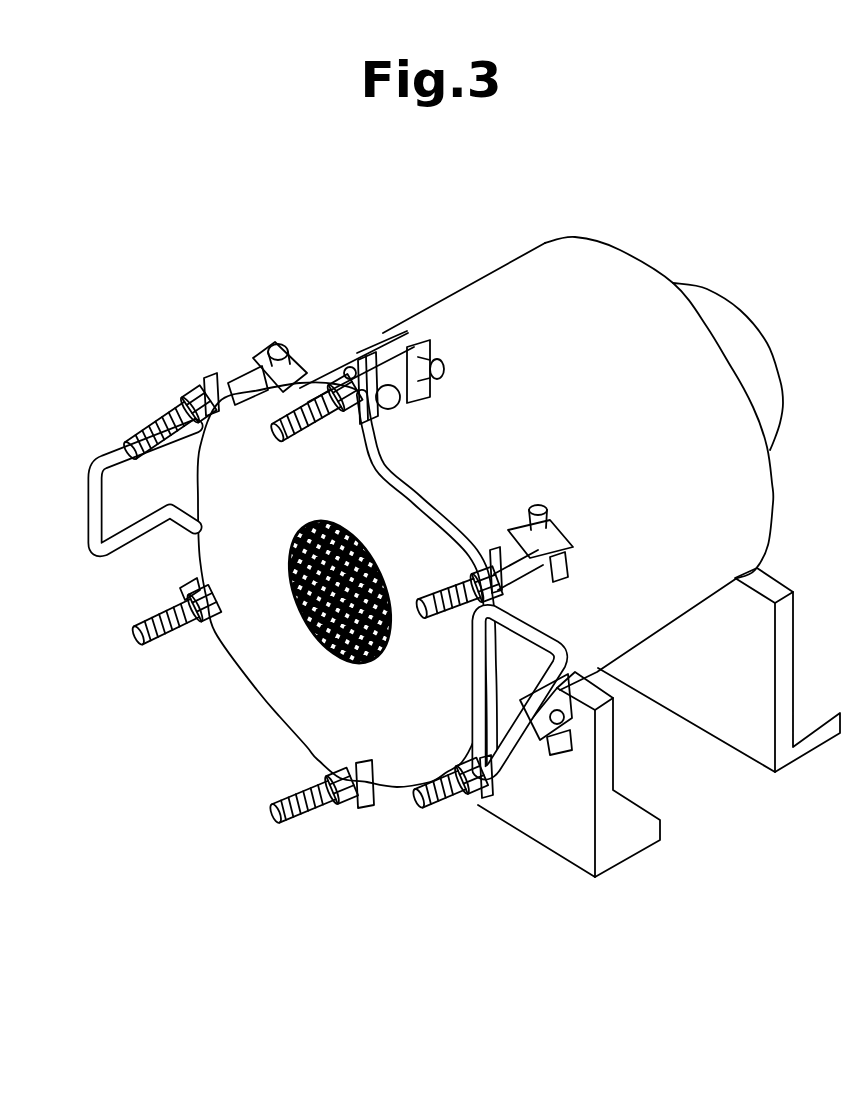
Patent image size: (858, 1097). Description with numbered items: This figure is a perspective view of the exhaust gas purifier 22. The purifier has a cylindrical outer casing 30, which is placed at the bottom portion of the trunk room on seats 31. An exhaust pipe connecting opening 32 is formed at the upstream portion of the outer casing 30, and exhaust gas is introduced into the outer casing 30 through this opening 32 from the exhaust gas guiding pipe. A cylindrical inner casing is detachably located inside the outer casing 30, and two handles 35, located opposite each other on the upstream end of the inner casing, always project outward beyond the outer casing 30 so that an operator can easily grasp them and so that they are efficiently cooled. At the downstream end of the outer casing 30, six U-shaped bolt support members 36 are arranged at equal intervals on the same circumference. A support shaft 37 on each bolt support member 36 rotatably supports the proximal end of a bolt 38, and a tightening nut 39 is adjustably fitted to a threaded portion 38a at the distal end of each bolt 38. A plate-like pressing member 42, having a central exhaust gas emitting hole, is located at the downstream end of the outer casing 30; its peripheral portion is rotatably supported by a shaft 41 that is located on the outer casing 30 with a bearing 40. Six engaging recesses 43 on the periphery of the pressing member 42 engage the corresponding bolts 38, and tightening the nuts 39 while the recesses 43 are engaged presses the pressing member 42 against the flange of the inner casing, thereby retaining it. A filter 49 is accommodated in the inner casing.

The exhaust gas purifier 22 is at (451, 227).
The outer casing 30 is at (779, 483).
The seats 31 is at (803, 757).
The exhaust pipe connecting opening 32 is at (790, 402).
The handles 35 is at (90, 446).
The bolt support members 36 is at (288, 366).
The support shaft 37 is at (272, 346).
The bolt 38 is at (291, 604).
The threaded portion 38a is at (160, 424).
The tightening nut 39 is at (190, 388).
The bearing 40 is at (406, 426).
The shaft 41 is at (352, 362).
The pressing member 42 is at (260, 694).
The engaging recesses 43 is at (212, 378).
The filter 49 is at (320, 636).